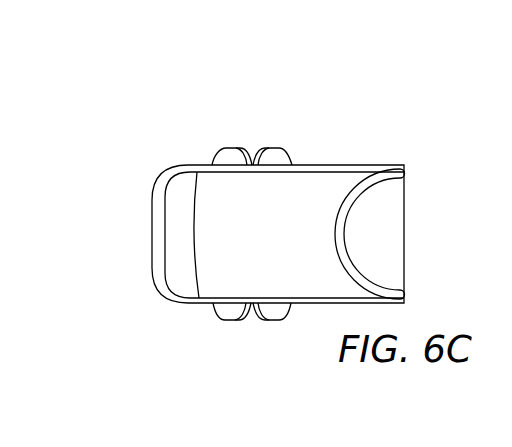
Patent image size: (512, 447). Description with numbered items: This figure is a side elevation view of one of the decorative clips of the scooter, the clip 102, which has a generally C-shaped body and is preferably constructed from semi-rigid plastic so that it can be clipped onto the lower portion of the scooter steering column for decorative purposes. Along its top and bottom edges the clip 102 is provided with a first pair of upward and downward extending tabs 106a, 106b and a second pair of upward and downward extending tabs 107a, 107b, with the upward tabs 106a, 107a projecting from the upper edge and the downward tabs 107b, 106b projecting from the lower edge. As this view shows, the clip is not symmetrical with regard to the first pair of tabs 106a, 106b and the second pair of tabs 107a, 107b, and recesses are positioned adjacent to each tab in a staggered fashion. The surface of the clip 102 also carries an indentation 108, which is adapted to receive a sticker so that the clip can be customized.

The decorative clip 102 is at (158, 162).
The upward extending tab 106a is at (232, 153).
The downward extending tab 106b is at (273, 320).
The upward extending tab 107a is at (272, 152).
The downward extending tab 107b is at (232, 320).
The indentation 108 is at (388, 233).